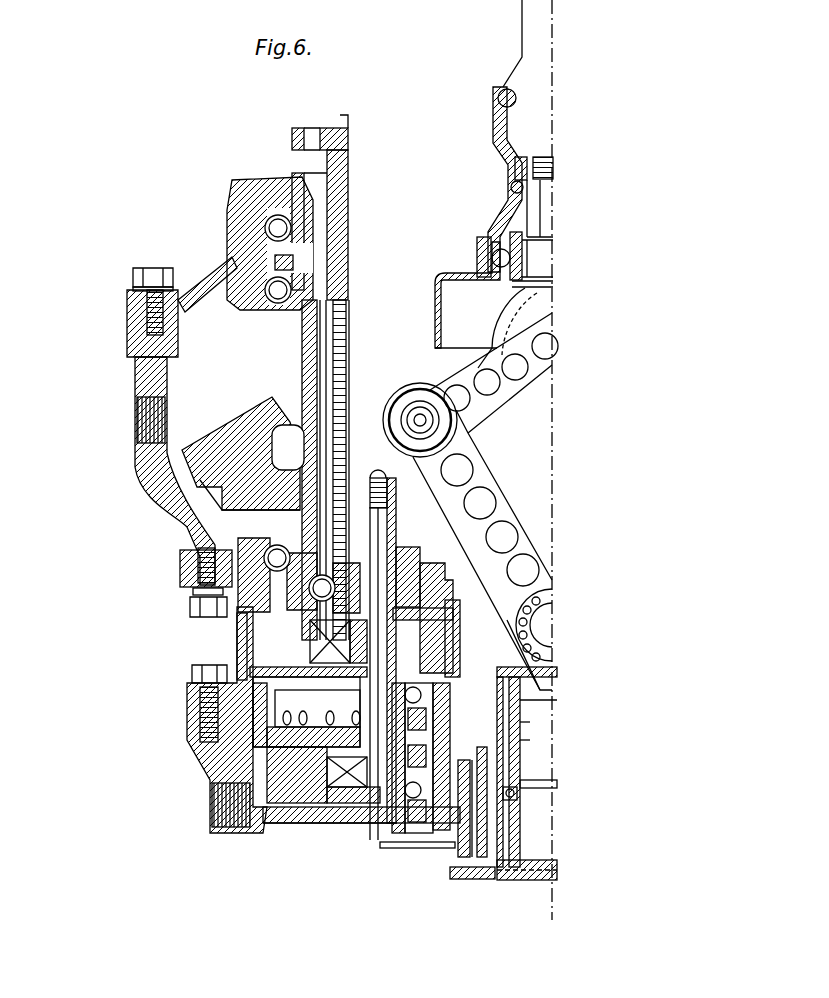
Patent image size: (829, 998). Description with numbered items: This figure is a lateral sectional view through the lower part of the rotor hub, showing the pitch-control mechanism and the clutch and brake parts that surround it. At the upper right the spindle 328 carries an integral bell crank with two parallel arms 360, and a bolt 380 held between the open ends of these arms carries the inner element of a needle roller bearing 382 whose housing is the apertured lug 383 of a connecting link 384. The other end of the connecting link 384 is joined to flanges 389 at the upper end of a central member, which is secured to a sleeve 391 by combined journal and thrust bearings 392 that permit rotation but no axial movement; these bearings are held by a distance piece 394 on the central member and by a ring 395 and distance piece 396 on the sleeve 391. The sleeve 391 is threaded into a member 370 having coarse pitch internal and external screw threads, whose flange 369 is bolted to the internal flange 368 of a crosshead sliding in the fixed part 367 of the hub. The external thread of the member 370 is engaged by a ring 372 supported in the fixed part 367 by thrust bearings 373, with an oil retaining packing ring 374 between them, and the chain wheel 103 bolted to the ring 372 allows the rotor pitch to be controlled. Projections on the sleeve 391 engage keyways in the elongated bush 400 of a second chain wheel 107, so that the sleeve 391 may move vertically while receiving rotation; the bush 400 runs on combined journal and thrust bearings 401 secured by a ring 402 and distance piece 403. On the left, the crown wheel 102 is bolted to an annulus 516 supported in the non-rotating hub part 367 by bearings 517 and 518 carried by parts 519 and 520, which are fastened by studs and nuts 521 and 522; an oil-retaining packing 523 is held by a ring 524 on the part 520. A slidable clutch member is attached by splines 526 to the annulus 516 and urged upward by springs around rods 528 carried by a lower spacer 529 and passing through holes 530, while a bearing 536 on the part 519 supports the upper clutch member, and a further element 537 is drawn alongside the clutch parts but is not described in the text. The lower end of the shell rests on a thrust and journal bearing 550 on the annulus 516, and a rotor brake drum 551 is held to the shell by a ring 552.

The crown wheel 102 is at (210, 473).
The chain wheel 103 is at (392, 845).
The chain wheel 107 is at (465, 879).
The spindle 328 is at (547, 223).
The arms 360 is at (487, 362).
The fixed part of the hub 367 is at (136, 380).
The internal flange 368 is at (447, 593).
The flange 369 is at (437, 610).
The member 370 is at (418, 583).
The ring 372 is at (410, 712).
The thrust bearings 373 is at (370, 808).
The oil retaining packing ring 374 is at (420, 736).
The bolt 380 is at (420, 418).
The needle roller bearing 382 is at (462, 436).
The apertured lug 383 is at (447, 455).
The connecting link 384 is at (500, 510).
The flanges 389 is at (527, 660).
The sleeve 391 is at (520, 705).
The combined journal and thrust bearings 392 is at (512, 685).
The distance piece 394 is at (518, 793).
The ring 395 is at (538, 880).
The distance piece 396 is at (520, 722).
The elongated bush 400 is at (470, 800).
The combined journal and thrust bearings 401 is at (478, 820).
The ring 402 is at (520, 740).
The distance piece 403 is at (520, 775).
The annulus 516 is at (316, 355).
The combined journal and thrust bearing 517 is at (262, 314).
The combined journal and thrust bearing 518 is at (230, 552).
The part 519 is at (222, 257).
The part 520 is at (250, 600).
The studs and nuts 521 is at (140, 310).
The studs and nuts 522 is at (190, 604).
The oil-retaining packing 523 is at (330, 655).
The ring 524 is at (312, 640).
The splines 526 is at (317, 398).
The rods 528 is at (338, 453).
The lower spacer 529 is at (348, 547).
The holes 530 is at (346, 363).
The journal and thrust bearing 536 is at (267, 230).
The column 537 is at (347, 214).
The thrust and journal bearing 550 is at (290, 600).
The rotor brake drum 551 is at (212, 706).
The ring 552 is at (355, 690).